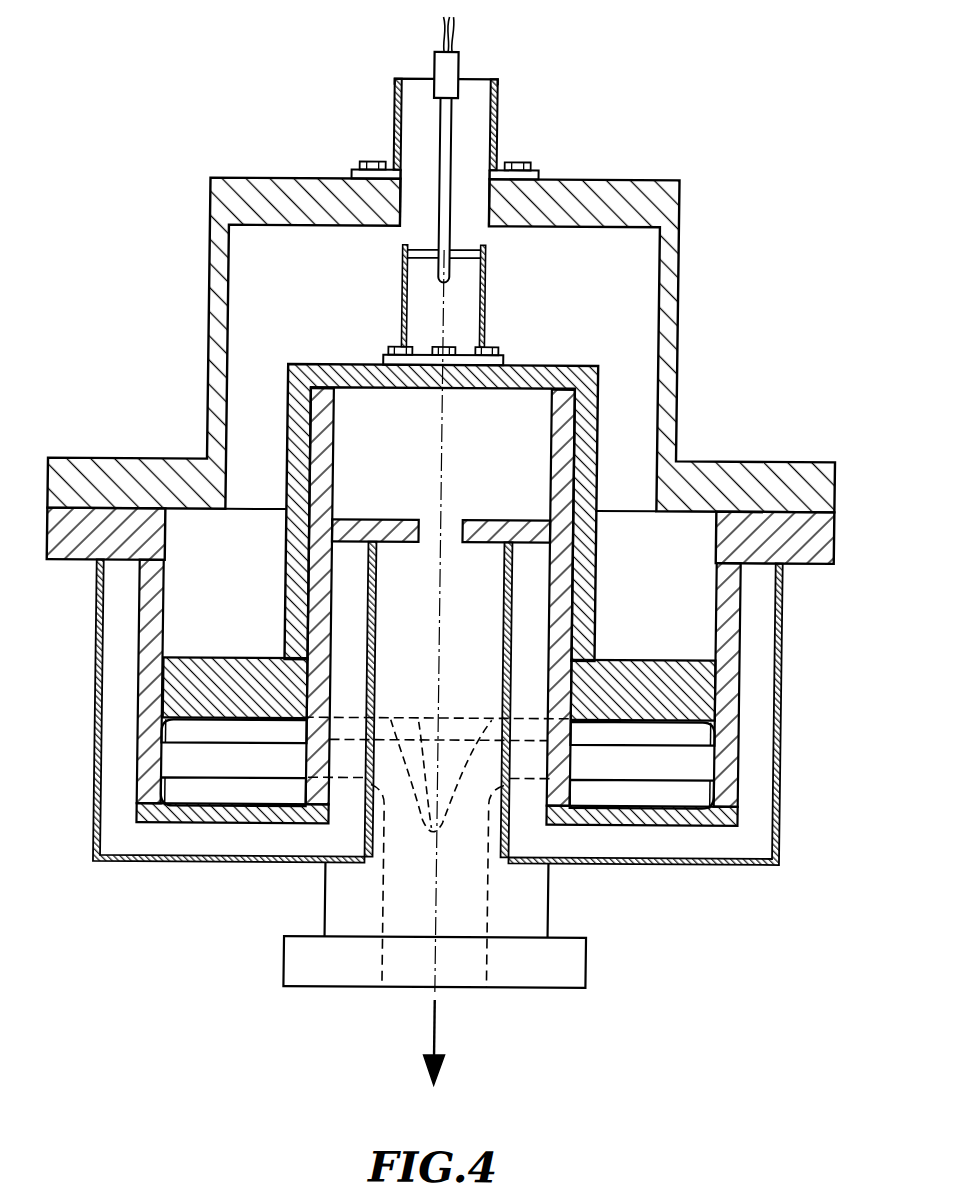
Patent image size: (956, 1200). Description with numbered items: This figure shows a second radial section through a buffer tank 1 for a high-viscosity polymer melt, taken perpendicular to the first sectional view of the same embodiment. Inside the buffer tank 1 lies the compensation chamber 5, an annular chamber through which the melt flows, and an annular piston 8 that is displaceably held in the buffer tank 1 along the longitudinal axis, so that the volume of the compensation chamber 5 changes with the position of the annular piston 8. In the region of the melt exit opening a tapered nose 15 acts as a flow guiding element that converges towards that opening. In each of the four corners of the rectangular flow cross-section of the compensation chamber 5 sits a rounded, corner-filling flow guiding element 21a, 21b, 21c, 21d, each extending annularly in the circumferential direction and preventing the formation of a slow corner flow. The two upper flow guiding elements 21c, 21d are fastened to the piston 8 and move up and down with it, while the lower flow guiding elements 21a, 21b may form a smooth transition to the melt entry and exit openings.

The buffer tank 1 is at (111, 148).
The compensation chamber 5 is at (675, 760).
The annular piston 8 is at (490, 512).
The nose 15 is at (420, 722).
The rounded flow guiding element 21a is at (158, 799).
The rounded flow guiding element 21b is at (288, 827).
The rounded flow guiding element 21c is at (163, 720).
The rounded flow guiding element 21d is at (294, 700).